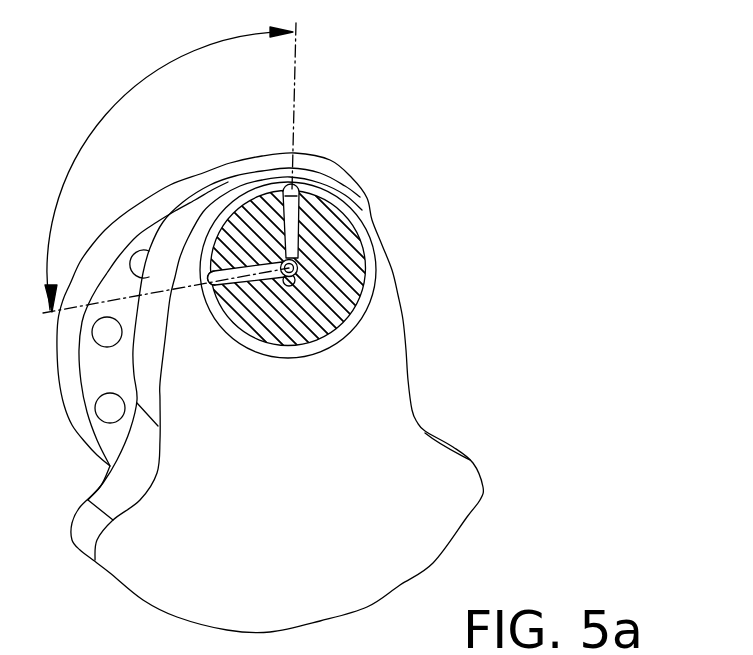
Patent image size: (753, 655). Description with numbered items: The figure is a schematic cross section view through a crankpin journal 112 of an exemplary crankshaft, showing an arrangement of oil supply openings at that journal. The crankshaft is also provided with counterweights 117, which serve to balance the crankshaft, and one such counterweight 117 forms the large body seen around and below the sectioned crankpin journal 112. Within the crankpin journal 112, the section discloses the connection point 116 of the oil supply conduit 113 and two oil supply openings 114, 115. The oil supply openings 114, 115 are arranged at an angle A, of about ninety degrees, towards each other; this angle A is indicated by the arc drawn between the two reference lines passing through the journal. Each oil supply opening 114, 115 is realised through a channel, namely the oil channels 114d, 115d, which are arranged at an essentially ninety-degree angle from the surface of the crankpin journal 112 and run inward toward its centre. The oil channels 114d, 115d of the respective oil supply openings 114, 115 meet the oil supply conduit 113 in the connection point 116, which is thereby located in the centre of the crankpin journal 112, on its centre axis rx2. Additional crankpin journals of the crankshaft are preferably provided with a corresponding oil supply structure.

The angle A is at (107, 113).
The crankpin journal 112 is at (251, 199).
The oil supply conduit 113 is at (305, 268).
The oil supply opening 114 is at (205, 290).
The oil channel 114d is at (208, 282).
The oil supply opening 115 is at (294, 190).
The oil channel 115d is at (291, 224).
The connection point 116 is at (297, 279).
The counterweight 117 is at (427, 492).
The centre axis of the crankpin journal rx2 is at (305, 271).